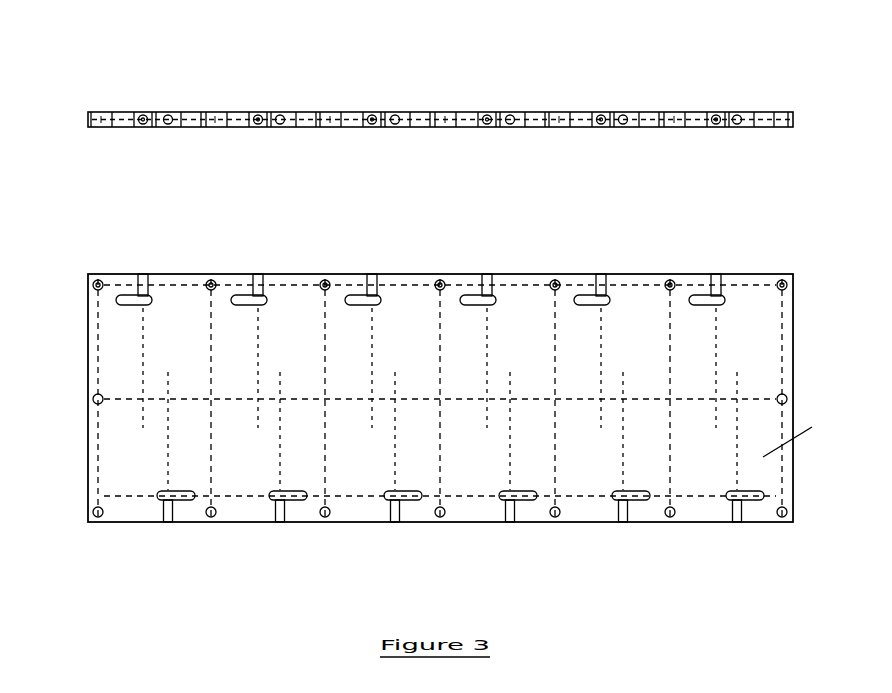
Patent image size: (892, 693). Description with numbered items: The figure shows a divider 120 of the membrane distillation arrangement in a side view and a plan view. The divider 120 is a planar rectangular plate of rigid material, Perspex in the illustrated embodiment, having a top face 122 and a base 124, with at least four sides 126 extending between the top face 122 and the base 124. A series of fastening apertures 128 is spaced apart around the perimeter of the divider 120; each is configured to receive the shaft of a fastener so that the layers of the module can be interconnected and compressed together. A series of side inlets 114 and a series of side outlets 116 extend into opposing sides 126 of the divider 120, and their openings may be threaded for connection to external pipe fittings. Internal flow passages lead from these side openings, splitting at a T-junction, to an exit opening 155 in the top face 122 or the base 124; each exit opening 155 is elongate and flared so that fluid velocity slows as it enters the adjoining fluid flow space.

The side inlet 114 is at (148, 111).
The side outlet 116 is at (142, 274).
The divider 120 is at (787, 111).
The top face 122 is at (452, 84).
The base 124 is at (422, 138).
The sides 126 is at (535, 262).
The fastening apertures 128 is at (558, 276).
The exit opening 155 is at (231, 296).